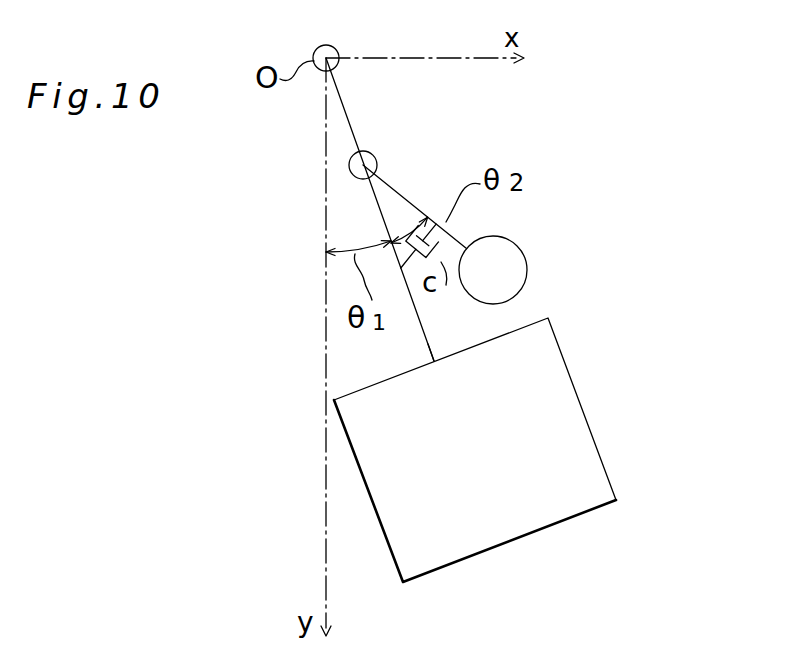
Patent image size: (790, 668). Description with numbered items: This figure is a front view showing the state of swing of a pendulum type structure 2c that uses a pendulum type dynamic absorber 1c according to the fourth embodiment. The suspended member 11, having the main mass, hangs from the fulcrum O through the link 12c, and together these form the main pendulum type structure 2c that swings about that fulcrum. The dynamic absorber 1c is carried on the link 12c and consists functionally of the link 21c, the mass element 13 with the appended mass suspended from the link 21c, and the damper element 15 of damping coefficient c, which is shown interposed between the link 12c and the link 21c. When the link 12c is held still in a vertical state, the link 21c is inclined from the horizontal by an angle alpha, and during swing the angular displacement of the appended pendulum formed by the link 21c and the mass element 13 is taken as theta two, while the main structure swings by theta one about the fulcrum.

The dynamic absorber 1c is at (542, 253).
The pendulum type structure 2c is at (607, 403).
The suspended member 11 is at (608, 478).
The link 12c is at (424, 336).
The mass element 13 is at (524, 287).
The damper element 15 is at (450, 335).
The link 21c is at (397, 186).